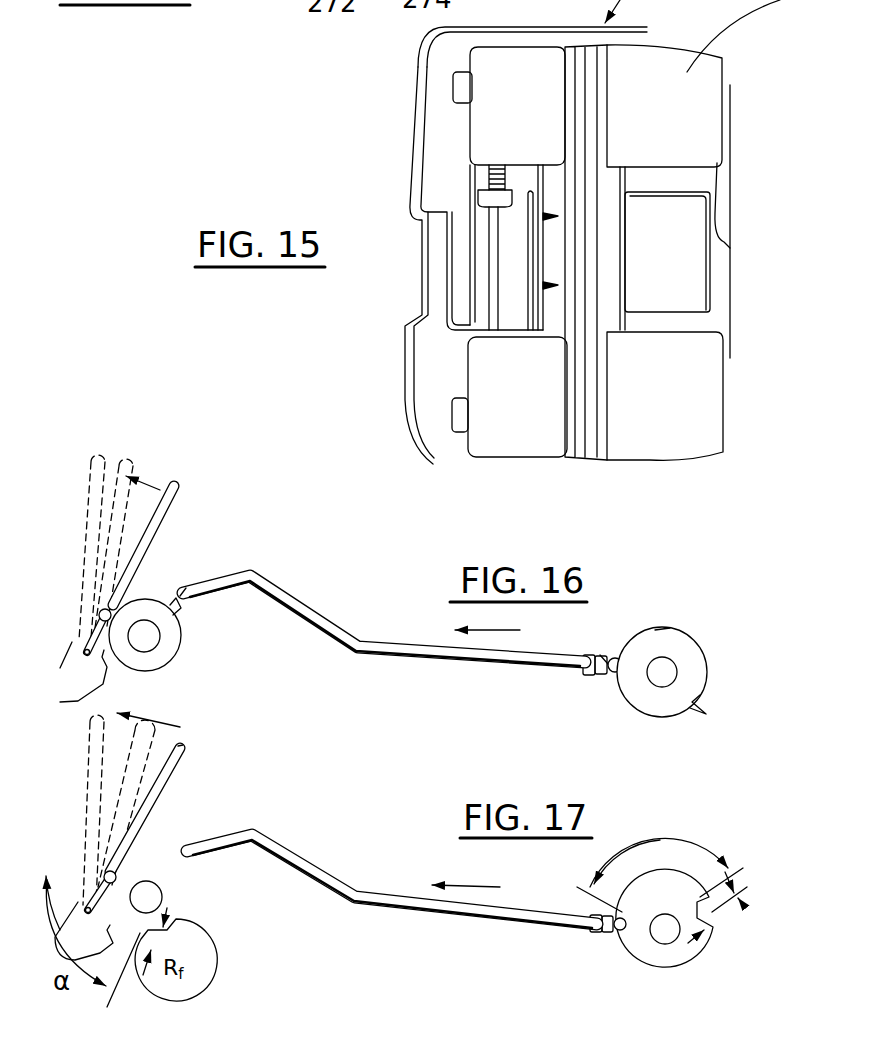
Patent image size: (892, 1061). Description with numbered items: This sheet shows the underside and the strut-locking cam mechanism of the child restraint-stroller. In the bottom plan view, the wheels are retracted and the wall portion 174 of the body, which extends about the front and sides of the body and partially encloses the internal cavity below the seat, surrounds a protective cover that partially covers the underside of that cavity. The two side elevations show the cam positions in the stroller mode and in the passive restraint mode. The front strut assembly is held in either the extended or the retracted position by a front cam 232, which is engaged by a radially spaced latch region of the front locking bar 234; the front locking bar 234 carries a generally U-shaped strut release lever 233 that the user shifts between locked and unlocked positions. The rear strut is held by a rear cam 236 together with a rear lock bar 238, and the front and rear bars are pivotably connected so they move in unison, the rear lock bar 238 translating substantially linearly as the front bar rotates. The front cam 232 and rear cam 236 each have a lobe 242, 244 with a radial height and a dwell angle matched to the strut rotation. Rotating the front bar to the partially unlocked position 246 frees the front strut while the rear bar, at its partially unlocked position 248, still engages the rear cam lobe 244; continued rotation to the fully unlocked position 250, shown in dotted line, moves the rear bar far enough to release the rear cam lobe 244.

In FIG. 15, the wall portion 174 is at (407, 135).
In FIG. 16, the front cam 232 is at (160, 578).
In FIG. 16, the strut release lever 233 is at (183, 512).
In FIG. 17, the strut release lever 233 is at (168, 801).
In FIG. 16, the front locking bar 234 is at (160, 490).
In FIG. 17, the front locking bar 234 is at (183, 745).
In FIG. 16, the rear cam 236 is at (676, 624).
In FIG. 16, the rear lock bar 238 is at (373, 647).
In FIG. 17, the rear lock bar 238 is at (377, 903).
In FIG. 16, the lobe 242 is at (190, 586).
In FIG. 16, the rear cam lobe 244 is at (673, 713).
In FIG. 16, the partially unlocked position 246 is at (138, 465).
In FIG. 17, the partially unlocked position 246 is at (180, 727).
In FIG. 16, the partially unlocked position of rear lock bar 248 is at (604, 653).
In FIG. 16, the fully unlocked position 250 is at (108, 462).
In FIG. 17, the fully unlocked position 250 is at (92, 714).